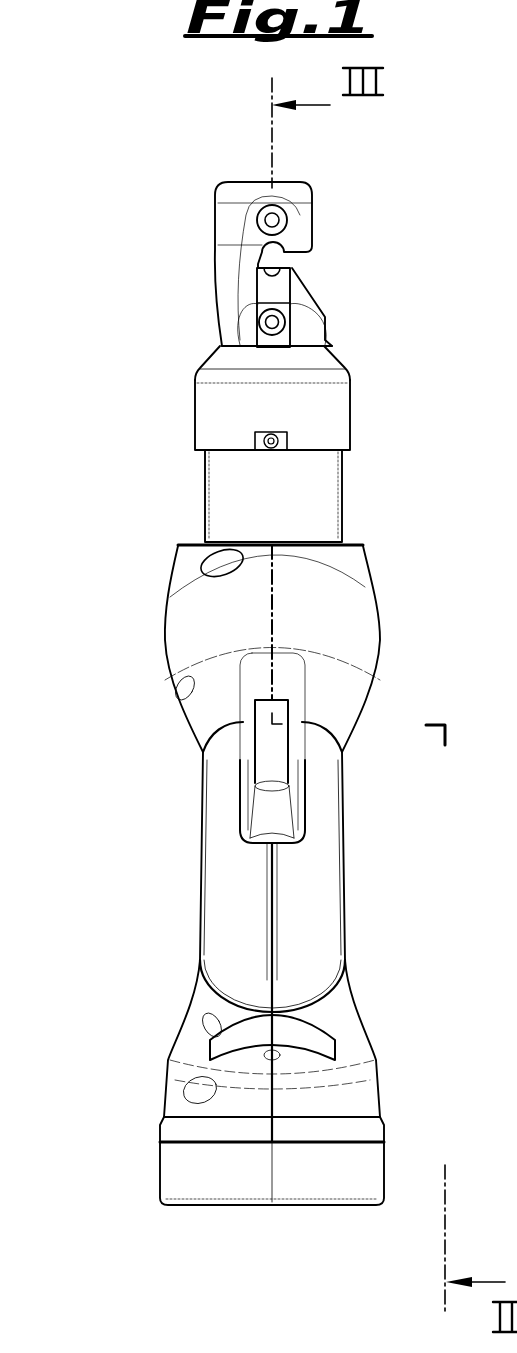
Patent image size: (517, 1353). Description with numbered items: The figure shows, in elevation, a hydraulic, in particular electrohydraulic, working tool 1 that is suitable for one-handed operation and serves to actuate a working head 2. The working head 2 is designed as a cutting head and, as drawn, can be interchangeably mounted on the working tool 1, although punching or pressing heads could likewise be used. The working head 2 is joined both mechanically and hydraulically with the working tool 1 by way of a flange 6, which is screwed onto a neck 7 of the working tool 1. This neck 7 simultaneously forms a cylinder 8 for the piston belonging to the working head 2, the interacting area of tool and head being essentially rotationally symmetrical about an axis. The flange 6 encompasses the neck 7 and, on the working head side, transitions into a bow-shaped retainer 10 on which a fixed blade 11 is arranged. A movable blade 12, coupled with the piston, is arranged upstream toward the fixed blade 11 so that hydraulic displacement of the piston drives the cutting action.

The working tool 1 is at (130, 621).
The working head 2 is at (150, 283).
The flange 6 is at (323, 398).
The neck 7 is at (273, 485).
The cylinder 8 is at (272, 516).
The retainer 10 is at (315, 303).
The fixed blade 11 is at (290, 235).
The movable blade 12 is at (270, 287).